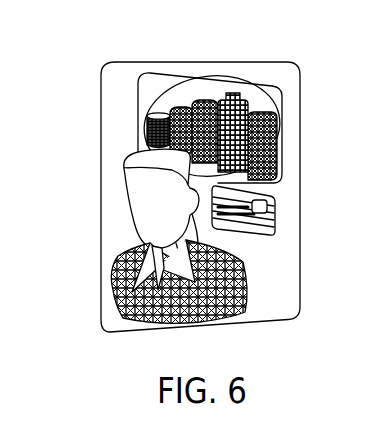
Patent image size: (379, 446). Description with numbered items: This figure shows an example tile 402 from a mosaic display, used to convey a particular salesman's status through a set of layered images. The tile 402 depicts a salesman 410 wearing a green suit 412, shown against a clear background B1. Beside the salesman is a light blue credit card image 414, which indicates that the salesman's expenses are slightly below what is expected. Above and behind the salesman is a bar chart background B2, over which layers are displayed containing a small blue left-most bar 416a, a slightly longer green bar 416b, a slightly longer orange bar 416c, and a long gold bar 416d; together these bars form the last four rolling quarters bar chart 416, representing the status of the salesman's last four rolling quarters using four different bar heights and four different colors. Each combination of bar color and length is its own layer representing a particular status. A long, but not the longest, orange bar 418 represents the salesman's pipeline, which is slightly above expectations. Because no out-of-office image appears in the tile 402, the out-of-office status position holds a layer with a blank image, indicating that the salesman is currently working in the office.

The tile 402 is at (121, 61).
The clear background B1 is at (182, 170).
The bar chart background B2 is at (150, 80).
The salesman 410 is at (125, 197).
The green suit 412 is at (127, 297).
The credit card image 414 is at (273, 221).
The last four rolling quarters bar chart 416 is at (268, 112).
The small blue left-most bar 416a is at (162, 108).
The green bar 416b is at (181, 106).
The orange bar 416c is at (208, 100).
The long gold bar 416d is at (232, 94).
The orange bar 418 is at (283, 150).